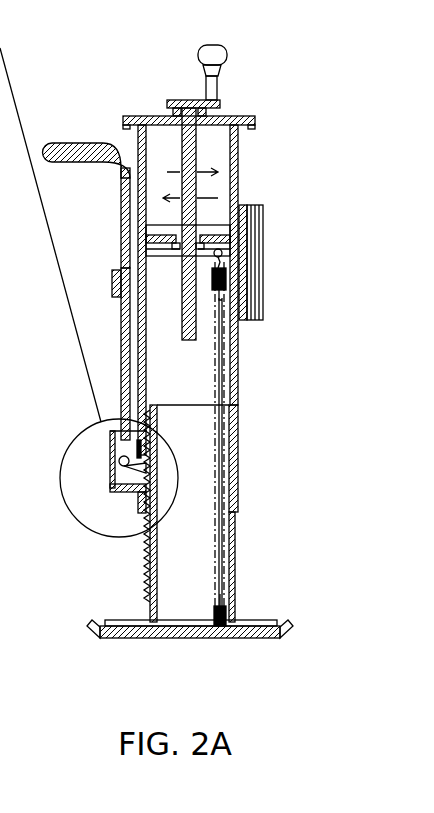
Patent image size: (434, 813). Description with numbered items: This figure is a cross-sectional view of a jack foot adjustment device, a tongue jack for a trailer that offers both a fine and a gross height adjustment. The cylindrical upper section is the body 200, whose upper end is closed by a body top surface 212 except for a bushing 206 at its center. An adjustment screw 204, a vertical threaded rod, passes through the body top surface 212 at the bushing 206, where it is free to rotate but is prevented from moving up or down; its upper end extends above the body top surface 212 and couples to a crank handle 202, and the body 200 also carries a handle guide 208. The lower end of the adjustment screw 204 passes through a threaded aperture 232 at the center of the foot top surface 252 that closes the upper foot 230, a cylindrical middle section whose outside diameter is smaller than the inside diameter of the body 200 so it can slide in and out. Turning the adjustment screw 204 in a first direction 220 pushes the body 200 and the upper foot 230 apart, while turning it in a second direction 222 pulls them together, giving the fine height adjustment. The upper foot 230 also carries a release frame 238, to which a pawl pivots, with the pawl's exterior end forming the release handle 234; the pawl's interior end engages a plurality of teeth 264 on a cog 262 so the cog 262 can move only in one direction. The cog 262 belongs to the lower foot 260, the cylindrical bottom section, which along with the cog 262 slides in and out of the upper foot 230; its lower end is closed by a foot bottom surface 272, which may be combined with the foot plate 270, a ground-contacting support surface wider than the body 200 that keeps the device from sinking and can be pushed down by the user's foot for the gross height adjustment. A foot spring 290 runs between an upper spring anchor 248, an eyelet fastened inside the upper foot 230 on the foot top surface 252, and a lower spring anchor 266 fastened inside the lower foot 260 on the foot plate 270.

The body 200 is at (258, 137).
The crank handle 202 is at (203, 52).
The adjustment screw 204 is at (240, 322).
The bushing 206 is at (214, 98).
The handle guide 208 is at (116, 298).
The body top surface 212 is at (246, 120).
The first direction 220 is at (167, 172).
The second direction 222 is at (222, 192).
The upper foot 230 is at (240, 368).
The threaded aperture 232 is at (122, 266).
The release handle 234 is at (128, 212).
The release frame 238 is at (110, 475).
The upper spring anchor 248 is at (240, 257).
The foot top surface 252 is at (238, 243).
The lower foot 260 is at (233, 543).
The cog 262 is at (237, 493).
The plurality of teeth 264 is at (148, 600).
The lower spring anchor 266 is at (237, 640).
The foot plate 270 is at (133, 638).
The foot bottom surface 272 is at (190, 618).
The foot spring 290 is at (228, 279).